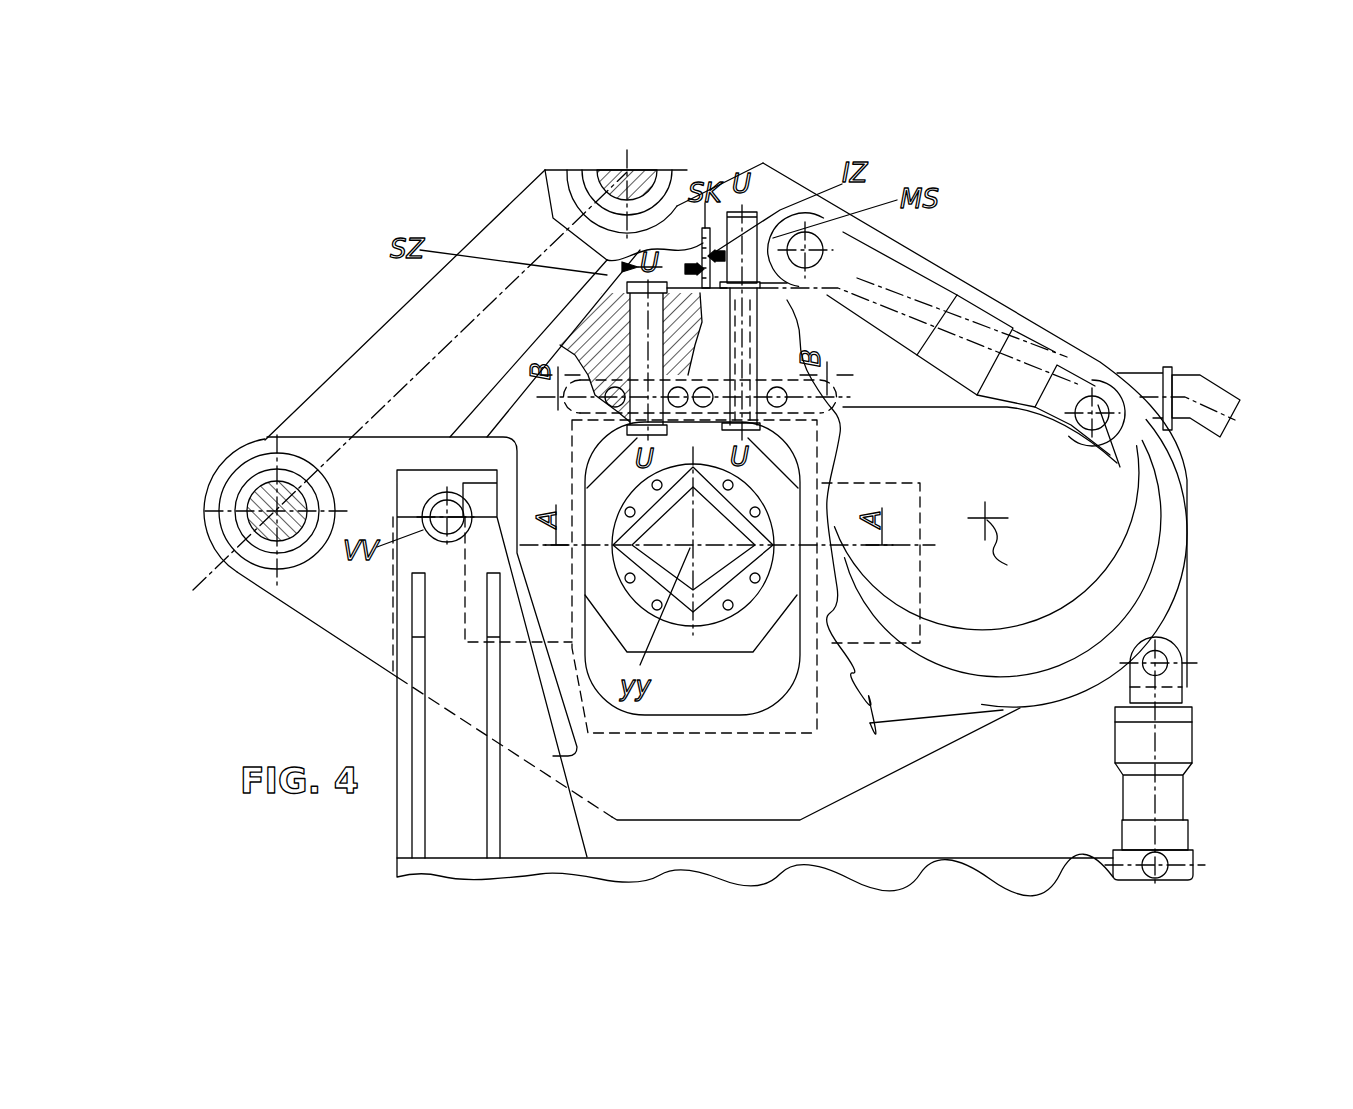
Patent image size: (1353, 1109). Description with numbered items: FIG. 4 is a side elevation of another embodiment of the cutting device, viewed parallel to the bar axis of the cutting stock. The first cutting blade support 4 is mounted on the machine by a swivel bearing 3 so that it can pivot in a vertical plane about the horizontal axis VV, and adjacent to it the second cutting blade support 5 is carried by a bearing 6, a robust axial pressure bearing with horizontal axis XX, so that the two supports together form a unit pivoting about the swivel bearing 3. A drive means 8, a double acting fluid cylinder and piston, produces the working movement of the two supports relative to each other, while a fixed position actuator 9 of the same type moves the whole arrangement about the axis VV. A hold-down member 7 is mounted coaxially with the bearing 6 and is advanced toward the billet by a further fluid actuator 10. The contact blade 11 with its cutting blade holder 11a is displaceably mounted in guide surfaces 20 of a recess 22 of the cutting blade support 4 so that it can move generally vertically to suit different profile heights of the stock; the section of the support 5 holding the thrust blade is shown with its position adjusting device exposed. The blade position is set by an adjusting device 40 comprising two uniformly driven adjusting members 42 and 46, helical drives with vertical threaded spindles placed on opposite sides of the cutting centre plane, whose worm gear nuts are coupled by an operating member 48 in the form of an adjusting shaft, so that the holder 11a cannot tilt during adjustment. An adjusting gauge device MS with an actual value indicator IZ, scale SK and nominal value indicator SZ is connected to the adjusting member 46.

The swivel bearing 3 is at (430, 540).
The first cutting blade support 4 is at (497, 427).
The second cutting blade support 5 is at (920, 268).
The bearing 6 is at (1103, 567).
The hold-down member 7 is at (1053, 547).
The drive means 8 is at (440, 313).
The fixed position actuator 9 is at (1183, 738).
The actuator 10 is at (910, 285).
The contact blade 11 is at (658, 503).
The cutting blade holder 11a is at (742, 653).
The guide surfaces 20 is at (585, 560).
The recess 22 is at (760, 685).
The adjusting device 40 is at (557, 243).
The adjusting member 42 is at (640, 333).
The adjusting member 46 is at (760, 328).
The operating member 48 is at (1143, 373).